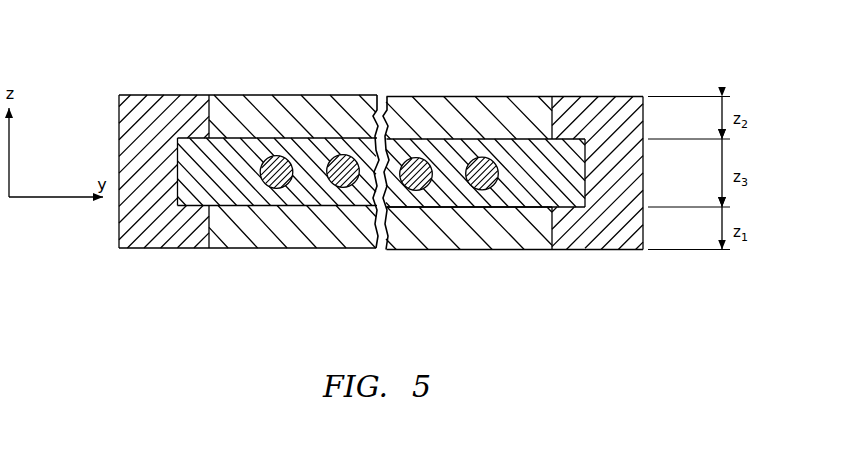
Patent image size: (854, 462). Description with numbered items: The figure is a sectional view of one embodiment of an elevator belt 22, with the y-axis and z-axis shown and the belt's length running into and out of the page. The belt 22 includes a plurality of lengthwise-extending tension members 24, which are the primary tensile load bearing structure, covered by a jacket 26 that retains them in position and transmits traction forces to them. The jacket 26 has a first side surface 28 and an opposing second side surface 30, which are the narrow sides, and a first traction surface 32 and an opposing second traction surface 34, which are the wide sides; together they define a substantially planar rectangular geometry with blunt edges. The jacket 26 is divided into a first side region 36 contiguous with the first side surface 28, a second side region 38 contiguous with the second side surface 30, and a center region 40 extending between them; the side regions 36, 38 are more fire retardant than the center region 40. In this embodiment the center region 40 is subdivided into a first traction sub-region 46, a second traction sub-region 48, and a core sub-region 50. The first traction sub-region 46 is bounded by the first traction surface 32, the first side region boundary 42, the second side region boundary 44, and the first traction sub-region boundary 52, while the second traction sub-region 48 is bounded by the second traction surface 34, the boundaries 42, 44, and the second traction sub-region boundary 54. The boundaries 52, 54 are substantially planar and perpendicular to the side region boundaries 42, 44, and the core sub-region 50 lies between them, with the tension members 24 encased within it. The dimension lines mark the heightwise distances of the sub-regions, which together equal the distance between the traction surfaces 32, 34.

The belt 22 is at (612, 48).
The tension members 24 is at (428, 158).
The jacket 26 is at (143, 82).
The first side surface 28 is at (119, 230).
The second side surface 30 is at (647, 235).
The first traction surface 32 is at (238, 250).
The second traction surface 34 is at (257, 93).
The first side region 36 is at (154, 232).
The second side region 38 is at (597, 231).
The center region 40 is at (470, 235).
The first side region boundary 42 is at (210, 122).
The second side region boundary 44 is at (552, 123).
The first traction sub-region 46 is at (226, 235).
The second traction sub-region 48 is at (239, 106).
The core sub-region 50 is at (367, 150).
The first traction sub-region boundary 52 is at (413, 209).
The second traction sub-region boundary 54 is at (327, 137).